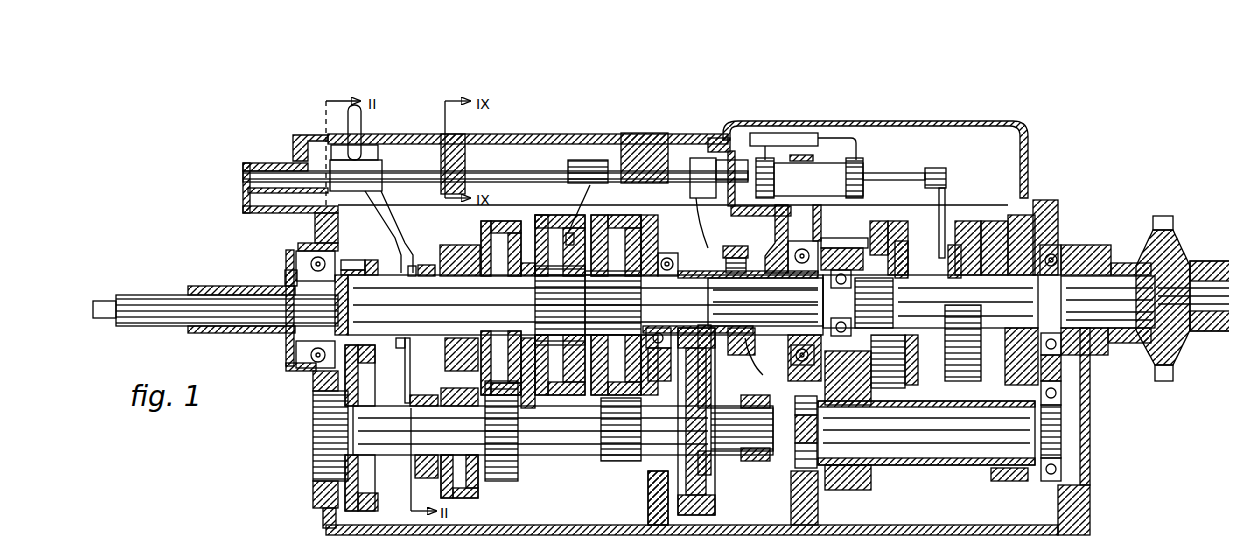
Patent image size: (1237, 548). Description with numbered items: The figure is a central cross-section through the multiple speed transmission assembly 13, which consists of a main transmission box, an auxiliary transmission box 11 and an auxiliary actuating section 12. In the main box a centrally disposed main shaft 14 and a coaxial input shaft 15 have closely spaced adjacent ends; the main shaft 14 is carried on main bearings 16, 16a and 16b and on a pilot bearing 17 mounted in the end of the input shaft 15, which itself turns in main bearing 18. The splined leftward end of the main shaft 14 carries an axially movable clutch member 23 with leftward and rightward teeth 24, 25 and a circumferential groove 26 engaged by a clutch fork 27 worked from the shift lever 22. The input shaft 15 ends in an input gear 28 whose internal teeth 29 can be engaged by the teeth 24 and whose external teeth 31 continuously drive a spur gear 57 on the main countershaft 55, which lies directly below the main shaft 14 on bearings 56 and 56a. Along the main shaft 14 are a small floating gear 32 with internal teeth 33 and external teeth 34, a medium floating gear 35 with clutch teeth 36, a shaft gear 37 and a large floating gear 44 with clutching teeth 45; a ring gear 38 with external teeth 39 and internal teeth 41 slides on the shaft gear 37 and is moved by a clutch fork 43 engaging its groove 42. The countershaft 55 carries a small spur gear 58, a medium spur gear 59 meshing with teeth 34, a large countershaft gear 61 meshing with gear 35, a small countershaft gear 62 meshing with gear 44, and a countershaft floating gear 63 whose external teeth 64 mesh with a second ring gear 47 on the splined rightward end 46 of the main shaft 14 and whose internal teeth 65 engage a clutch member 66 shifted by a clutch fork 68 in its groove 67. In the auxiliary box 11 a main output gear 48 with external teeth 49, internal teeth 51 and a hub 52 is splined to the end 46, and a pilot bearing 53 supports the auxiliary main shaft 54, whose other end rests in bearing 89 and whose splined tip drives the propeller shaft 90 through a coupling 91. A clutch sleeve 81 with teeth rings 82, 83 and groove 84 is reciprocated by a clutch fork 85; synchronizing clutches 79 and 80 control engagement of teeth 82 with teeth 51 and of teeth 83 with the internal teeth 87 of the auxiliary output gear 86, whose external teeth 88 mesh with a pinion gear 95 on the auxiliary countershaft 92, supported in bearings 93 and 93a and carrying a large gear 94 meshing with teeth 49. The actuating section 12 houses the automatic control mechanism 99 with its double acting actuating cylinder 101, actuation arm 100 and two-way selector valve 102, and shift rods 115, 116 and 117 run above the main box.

The auxiliary transmission box 11 is at (1052, 510).
The auxiliary actuating section 12 is at (1030, 118).
The multiple speed transmission assembly 13 is at (290, 450).
The main shaft 14 is at (585, 305).
The input shaft 15 is at (230, 307).
The main bearing 16 is at (653, 220).
The main bearing 16a is at (730, 238).
The main bearing 16b is at (803, 237).
The pilot bearing 17 is at (347, 262).
The main bearing 18 is at (297, 357).
The shift lever 22 is at (340, 110).
The clutch member 23 is at (383, 355).
The leftward external teeth 24 is at (378, 342).
The rightward external teeth 25 is at (404, 262).
The circumferential groove 26 is at (403, 343).
The clutch fork 27 is at (398, 215).
The input gear 28 is at (277, 270).
The internal teeth 29 is at (362, 253).
The external teeth 31 is at (338, 250).
The small floating gear 32 is at (470, 232).
The internal teeth 33 is at (422, 257).
The external teeth 34 is at (440, 237).
The medium floating gear 35 is at (493, 212).
The clutch teeth 36 is at (517, 335).
The shaft gear 37 is at (613, 303).
The ring gear 38 is at (527, 203).
The external teeth 39 is at (547, 207).
The internal teeth 41 is at (525, 253).
The circumferential groove 42 is at (563, 350).
The clutch fork 43 is at (573, 213).
The large floating gear 44 is at (608, 202).
The clutching teeth 45 is at (585, 347).
The rightward end of the main shaft 46 is at (753, 287).
The second ring gear 47 is at (665, 248).
The main output gear 48 is at (850, 250).
The external teeth 49 is at (828, 243).
The internal teeth 51 is at (857, 333).
The hub 52 is at (760, 343).
The pilot bearing 53 is at (840, 240).
The auxiliary main shaft 54 is at (1118, 300).
The main countershaft 55 is at (393, 433).
The bearing 56 is at (320, 403).
The bearing 56a is at (638, 468).
The spur gear 57 is at (357, 503).
The small spur gear 58 is at (420, 470).
The medium spur gear 59 is at (460, 487).
The large countershaft gear 61 is at (497, 473).
The small countershaft gear 62 is at (603, 440).
The countershaft floating gear 63 is at (685, 507).
The external teeth 64 is at (698, 507).
The internal teeth 65 is at (712, 455).
The clutch member 66 is at (758, 455).
The circumferential groove 67 is at (750, 452).
The clutch fork 68 is at (698, 210).
The synchronizing clutch 79 is at (880, 383).
The synchronizing clutch 80 is at (957, 212).
The clutch sleeve 81 is at (900, 345).
The leftward ring of external teeth 82 is at (887, 240).
The rightward ring of external teeth 83 is at (953, 343).
The circumferential groove 84 is at (922, 330).
The clutch fork 85 is at (931, 190).
The auxiliary output gear 86 is at (1002, 205).
The internal teeth 87 is at (977, 212).
The external teeth 88 is at (1022, 197).
The bearing 89 is at (1053, 250).
The propeller shaft 90 is at (1203, 262).
The coupling 91 is at (1160, 208).
The auxiliary countershaft 92 is at (930, 433).
The bearing 93 is at (810, 473).
The bearing 93a is at (1053, 385).
The large gear 94 is at (853, 487).
The pinion gear 95 is at (997, 477).
The automatic control mechanism 99 is at (862, 152).
The actuation arm 100 is at (888, 168).
The double acting actuating cylinder 101 is at (822, 156).
The two-way selector valve 102 is at (780, 130).
The shift rod 115 is at (474, 160).
The shift rod 116 is at (552, 158).
The shift rod 117 is at (735, 152).